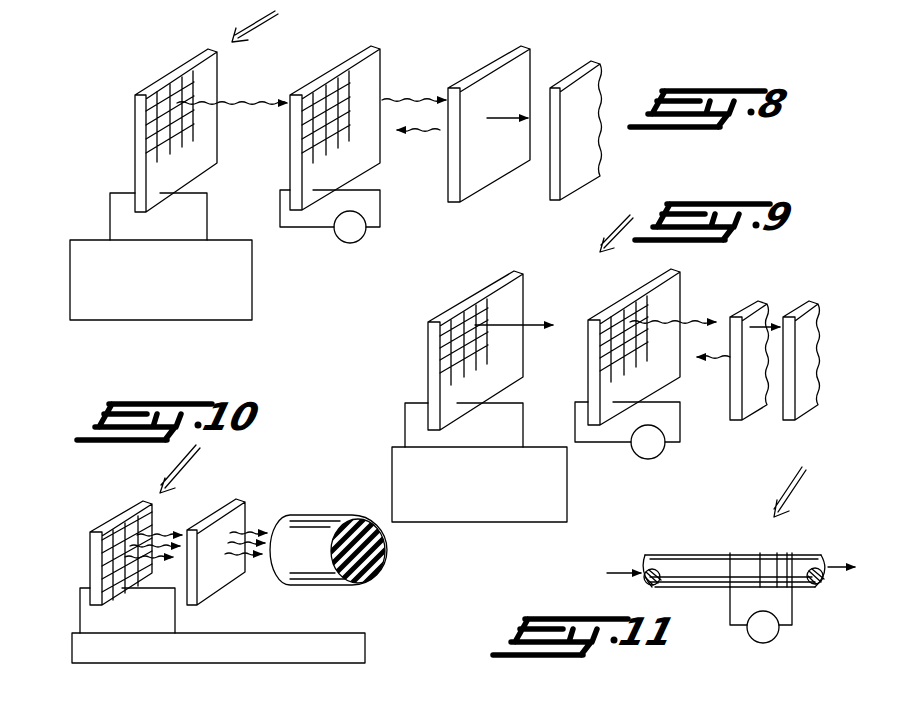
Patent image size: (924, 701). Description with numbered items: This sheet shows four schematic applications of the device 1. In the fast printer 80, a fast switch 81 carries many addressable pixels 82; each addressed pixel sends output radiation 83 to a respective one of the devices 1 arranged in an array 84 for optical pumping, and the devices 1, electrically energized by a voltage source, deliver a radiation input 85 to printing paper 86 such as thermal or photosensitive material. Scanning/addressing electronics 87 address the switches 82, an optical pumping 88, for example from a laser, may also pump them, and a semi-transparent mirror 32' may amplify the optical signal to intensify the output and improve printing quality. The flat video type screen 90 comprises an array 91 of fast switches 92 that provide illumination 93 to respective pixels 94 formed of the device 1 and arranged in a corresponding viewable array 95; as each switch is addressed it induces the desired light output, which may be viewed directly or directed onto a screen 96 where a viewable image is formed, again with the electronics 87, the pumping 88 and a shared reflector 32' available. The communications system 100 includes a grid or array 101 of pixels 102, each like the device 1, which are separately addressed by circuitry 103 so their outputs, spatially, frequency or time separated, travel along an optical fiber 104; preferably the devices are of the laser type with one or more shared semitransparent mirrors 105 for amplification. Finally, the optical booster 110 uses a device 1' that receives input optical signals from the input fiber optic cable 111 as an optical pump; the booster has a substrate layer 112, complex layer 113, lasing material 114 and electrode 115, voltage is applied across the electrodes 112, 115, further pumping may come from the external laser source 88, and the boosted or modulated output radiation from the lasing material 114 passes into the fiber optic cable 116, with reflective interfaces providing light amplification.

In FIG. 8, the device 1 is at (330, 121).
In FIG. 11, the device 1' is at (734, 547).
In FIG. 8, the semi-transparent mirror 32' is at (489, 103).
In FIG. 9, the semi-transparent mirror 32' is at (736, 378).
In FIG. 8, the fast printer 80 is at (143, 119).
In FIG. 8, the fast switch 81 is at (152, 119).
In FIG. 8, the addressable pixels 82 is at (170, 94).
In FIG. 8, the output radiation 83 is at (247, 101).
In FIG. 8, the array 84 is at (340, 54).
In FIG. 8, the radiation input 85 is at (406, 100).
In FIG. 8, the printing paper 86 is at (590, 85).
In FIG. 8, the scanning/addressing electronics 87 is at (253, 282).
In FIG. 9, the scanning/addressing electronics 87 is at (486, 524).
In FIG. 8, the optical pumping 88 is at (250, 12).
In FIG. 9, the optical pumping 88 is at (622, 224).
In FIG. 10, the optical pumping 88 is at (198, 450).
In FIG. 11, the optical pumping 88 is at (802, 474).
In FIG. 9, the flat video type screen 90 is at (481, 325).
In FIG. 9, the array 91 is at (466, 343).
In FIG. 9, the fast switches 92 is at (437, 336).
In FIG. 9, the illumination 93 is at (511, 328).
In FIG. 9, the pixels 94 is at (640, 303).
In FIG. 9, the viewable array 95 is at (682, 296).
In FIG. 9, the screen 96 is at (808, 326).
In FIG. 10, the communications system 100 is at (214, 531).
In FIG. 10, the grid or array 101 is at (113, 532).
In FIG. 10, the pixels 102 is at (129, 482).
In FIG. 10, the circuitry 103 is at (366, 640).
In FIG. 10, the optical fiber 104 is at (330, 517).
In FIG. 10, the semitransparent mirror 105 is at (247, 505).
In FIG. 11, the optical booster 110 is at (734, 572).
In FIG. 11, the input fiber optic cable 111 is at (670, 592).
In FIG. 11, the substrate layer 112 is at (742, 551).
In FIG. 11, the complex layer 113 is at (770, 552).
In FIG. 11, the lasing material 114 is at (783, 552).
In FIG. 11, the electrode 115 is at (792, 552).
In FIG. 11, the fiber optic cable 116 is at (800, 590).